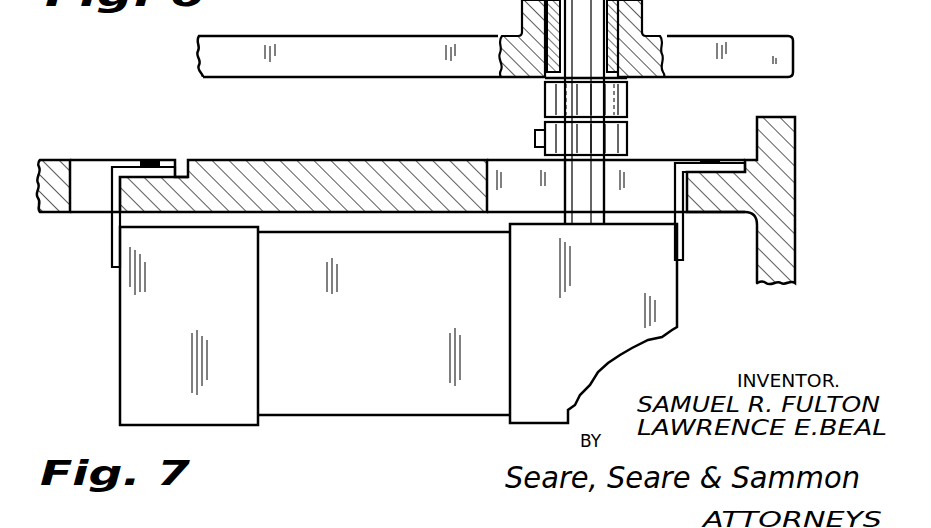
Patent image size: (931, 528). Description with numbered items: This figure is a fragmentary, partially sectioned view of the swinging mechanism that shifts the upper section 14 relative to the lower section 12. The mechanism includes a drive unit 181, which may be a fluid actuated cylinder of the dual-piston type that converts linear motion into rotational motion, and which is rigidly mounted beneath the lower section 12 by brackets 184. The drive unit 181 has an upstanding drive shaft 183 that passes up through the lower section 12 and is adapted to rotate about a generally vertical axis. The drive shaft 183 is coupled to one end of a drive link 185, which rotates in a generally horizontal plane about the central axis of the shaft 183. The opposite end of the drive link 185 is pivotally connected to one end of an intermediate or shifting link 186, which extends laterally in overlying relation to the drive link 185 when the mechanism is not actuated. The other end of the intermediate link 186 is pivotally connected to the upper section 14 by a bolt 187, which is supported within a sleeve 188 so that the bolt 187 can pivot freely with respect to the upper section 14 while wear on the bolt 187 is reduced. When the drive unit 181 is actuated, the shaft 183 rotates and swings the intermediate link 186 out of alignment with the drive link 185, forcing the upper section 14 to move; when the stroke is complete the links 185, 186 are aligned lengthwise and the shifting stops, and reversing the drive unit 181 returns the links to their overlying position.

The lower section 12 is at (833, 108).
The upper section 14 is at (779, 33).
The drive unit 181 is at (390, 405).
The drive shaft 183 is at (578, 172).
The brackets 184 is at (148, 125).
The drive link 185 is at (698, 193).
The intermediate link 186 is at (557, 99).
The bolt 187 is at (588, 30).
The sleeve 188 is at (561, 27).